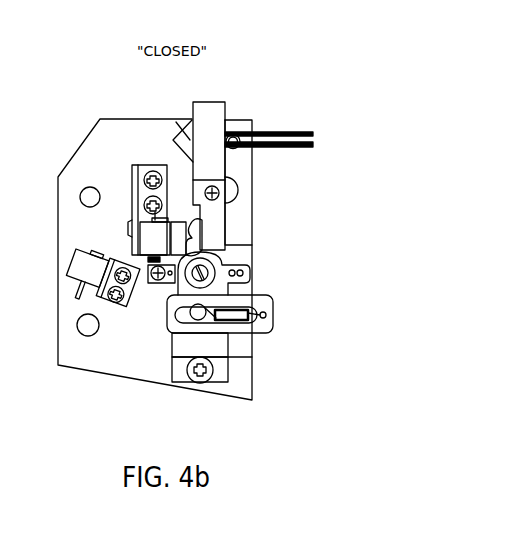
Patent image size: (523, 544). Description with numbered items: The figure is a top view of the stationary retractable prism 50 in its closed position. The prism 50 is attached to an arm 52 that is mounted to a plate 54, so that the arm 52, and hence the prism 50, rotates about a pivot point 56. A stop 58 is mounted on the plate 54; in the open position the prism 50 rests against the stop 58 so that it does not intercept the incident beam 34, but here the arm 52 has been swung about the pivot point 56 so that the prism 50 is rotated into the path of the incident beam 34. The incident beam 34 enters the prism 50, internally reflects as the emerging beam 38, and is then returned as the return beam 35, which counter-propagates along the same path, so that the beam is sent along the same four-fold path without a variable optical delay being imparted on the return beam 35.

The stationary retractable prism 50 is at (185, 137).
The arm 52 is at (215, 105).
The plate 54 is at (242, 380).
The pivot point 56 is at (213, 263).
The stop 58 is at (78, 263).
The incident beam 34 is at (298, 150).
The emerging beam 38 is at (285, 131).
The return beam 35 is at (289, 143).